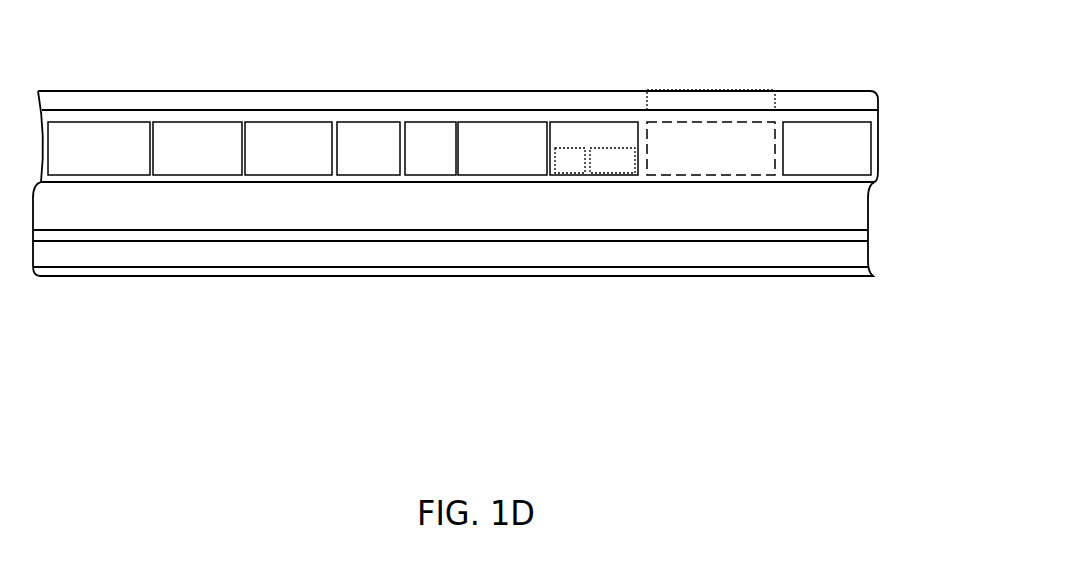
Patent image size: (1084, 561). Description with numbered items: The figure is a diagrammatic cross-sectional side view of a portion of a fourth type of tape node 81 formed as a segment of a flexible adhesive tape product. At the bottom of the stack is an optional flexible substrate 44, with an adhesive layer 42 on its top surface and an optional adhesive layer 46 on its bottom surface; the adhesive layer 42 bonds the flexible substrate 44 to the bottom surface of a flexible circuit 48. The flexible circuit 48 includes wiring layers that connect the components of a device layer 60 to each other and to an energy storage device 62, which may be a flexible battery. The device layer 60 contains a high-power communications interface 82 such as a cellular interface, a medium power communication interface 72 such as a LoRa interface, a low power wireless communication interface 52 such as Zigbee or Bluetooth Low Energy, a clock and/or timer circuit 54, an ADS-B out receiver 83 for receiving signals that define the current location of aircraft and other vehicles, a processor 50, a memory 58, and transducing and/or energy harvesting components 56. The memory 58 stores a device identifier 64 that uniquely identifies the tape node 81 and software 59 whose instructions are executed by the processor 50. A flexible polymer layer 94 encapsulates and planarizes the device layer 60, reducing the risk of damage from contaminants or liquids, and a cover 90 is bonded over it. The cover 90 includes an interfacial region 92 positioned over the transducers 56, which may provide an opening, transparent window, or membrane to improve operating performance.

The tape node 81 is at (859, 24).
The flexible circuit 48 is at (231, 215).
The cover 90 is at (545, 107).
The device layer 60 is at (888, 185).
The adhesive layer 42 is at (348, 240).
The flexible substrate 44 is at (195, 250).
The adhesive layer 46 is at (155, 270).
The high-power communications interface 82 is at (110, 122).
The medium power communication interface 72 is at (215, 122).
The low power wireless communication interface 52 is at (288, 122).
The clock and/or timer circuit 54 is at (360, 122).
The ADS-B out receiver 83 is at (420, 122).
The processor 50 is at (493, 122).
The memory 58 is at (607, 122).
The device identifier 64 is at (560, 173).
The software 59 is at (627, 173).
The transducing and/or energy harvesting component(s) 56 is at (720, 175).
The interfacial region 92 is at (668, 98).
The flexible polymer layer 94 is at (778, 121).
The energy storage device 62 is at (848, 122).